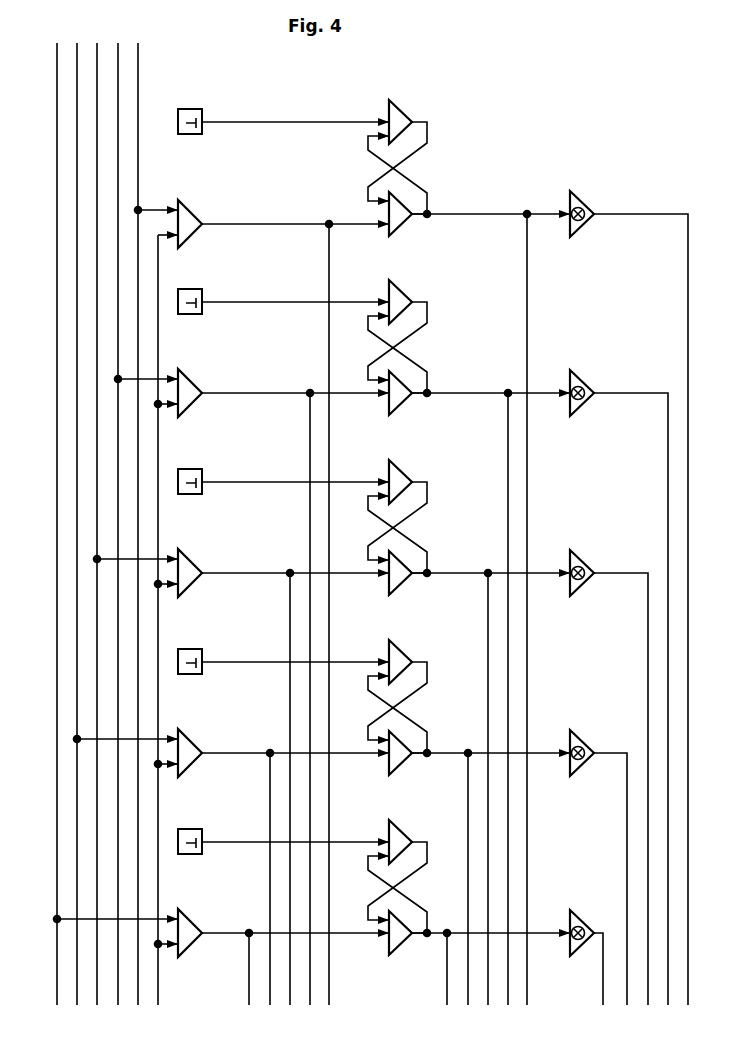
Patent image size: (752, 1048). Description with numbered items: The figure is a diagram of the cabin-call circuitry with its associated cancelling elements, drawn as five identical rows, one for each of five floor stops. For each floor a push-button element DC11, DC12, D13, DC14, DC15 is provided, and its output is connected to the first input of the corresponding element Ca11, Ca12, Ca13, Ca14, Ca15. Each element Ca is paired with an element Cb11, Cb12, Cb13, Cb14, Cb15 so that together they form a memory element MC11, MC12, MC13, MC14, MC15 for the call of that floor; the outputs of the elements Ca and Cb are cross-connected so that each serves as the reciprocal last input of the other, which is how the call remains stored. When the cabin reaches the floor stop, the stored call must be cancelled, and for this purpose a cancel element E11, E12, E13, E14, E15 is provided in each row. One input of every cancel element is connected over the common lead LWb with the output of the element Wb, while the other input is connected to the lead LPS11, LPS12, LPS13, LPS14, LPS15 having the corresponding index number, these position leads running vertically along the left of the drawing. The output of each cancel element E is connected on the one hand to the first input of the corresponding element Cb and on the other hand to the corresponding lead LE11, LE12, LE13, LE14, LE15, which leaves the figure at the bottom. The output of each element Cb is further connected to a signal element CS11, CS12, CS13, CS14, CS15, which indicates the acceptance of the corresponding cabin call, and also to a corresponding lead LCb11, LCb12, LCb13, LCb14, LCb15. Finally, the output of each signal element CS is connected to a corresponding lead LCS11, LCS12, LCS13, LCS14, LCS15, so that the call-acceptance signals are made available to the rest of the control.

The lead LPS LPS11 is at (48, 524).
The lead LPS LPS12 is at (68, 524).
The lead LPS LPS13 is at (88, 524).
The lead LPS LPS14 is at (109, 524).
The lead LPS LPS15 is at (129, 524).
The lead LWb is at (150, 620).
The cancel element E11 is at (197, 942).
The cancel element E12 is at (197, 762).
The cancel element E13 is at (197, 582).
The cancel element E14 is at (197, 402).
The cancel element E15 is at (197, 233).
The push-button element DC11 is at (214, 859).
The push-button element DC12 is at (214, 679).
The push-button element D13 is at (214, 499).
The push-button element DC14 is at (214, 319).
The push-button element DC15 is at (214, 139).
The element Ca Ca11 is at (405, 834).
The element Ca Ca12 is at (405, 654).
The element Ca Ca13 is at (405, 474).
The element Ca Ca14 is at (405, 294).
The element Ca Ca15 is at (405, 114).
The element Cb Cb11 is at (402, 944).
The element Cb Cb12 is at (402, 764).
The element Cb Cb13 is at (402, 584).
The element Cb Cb14 is at (402, 404).
The element Cb Cb15 is at (402, 225).
The memory element MC11 is at (421, 887).
The memory element MC12 is at (421, 707).
The memory element MC13 is at (421, 527).
The memory element MC14 is at (424, 347).
The memory element MC15 is at (424, 168).
The signal element CS11 is at (600, 918).
The signal element CS12 is at (600, 738).
The signal element CS13 is at (600, 558).
The signal element CS14 is at (600, 378).
The signal element CS15 is at (600, 199).
The lead LE LE11 is at (242, 968).
The lead LE LE12 is at (263, 878).
The lead LE LE13 is at (283, 788).
The lead LE LE14 is at (303, 698).
The lead LE LE15 is at (322, 614).
The lead LCb LCb11 is at (440, 968).
The lead LCb LCb12 is at (461, 878).
The lead LCb LCb13 is at (481, 788).
The lead LCb LCb14 is at (501, 698).
The lead LCb LCb15 is at (520, 609).
The lead LCS LCS11 is at (595, 969).
The lead LCS LCS12 is at (611, 879).
The lead LCS LCS13 is at (622, 789).
The lead LCS LCS14 is at (632, 699).
The lead LCS LCS15 is at (642, 610).